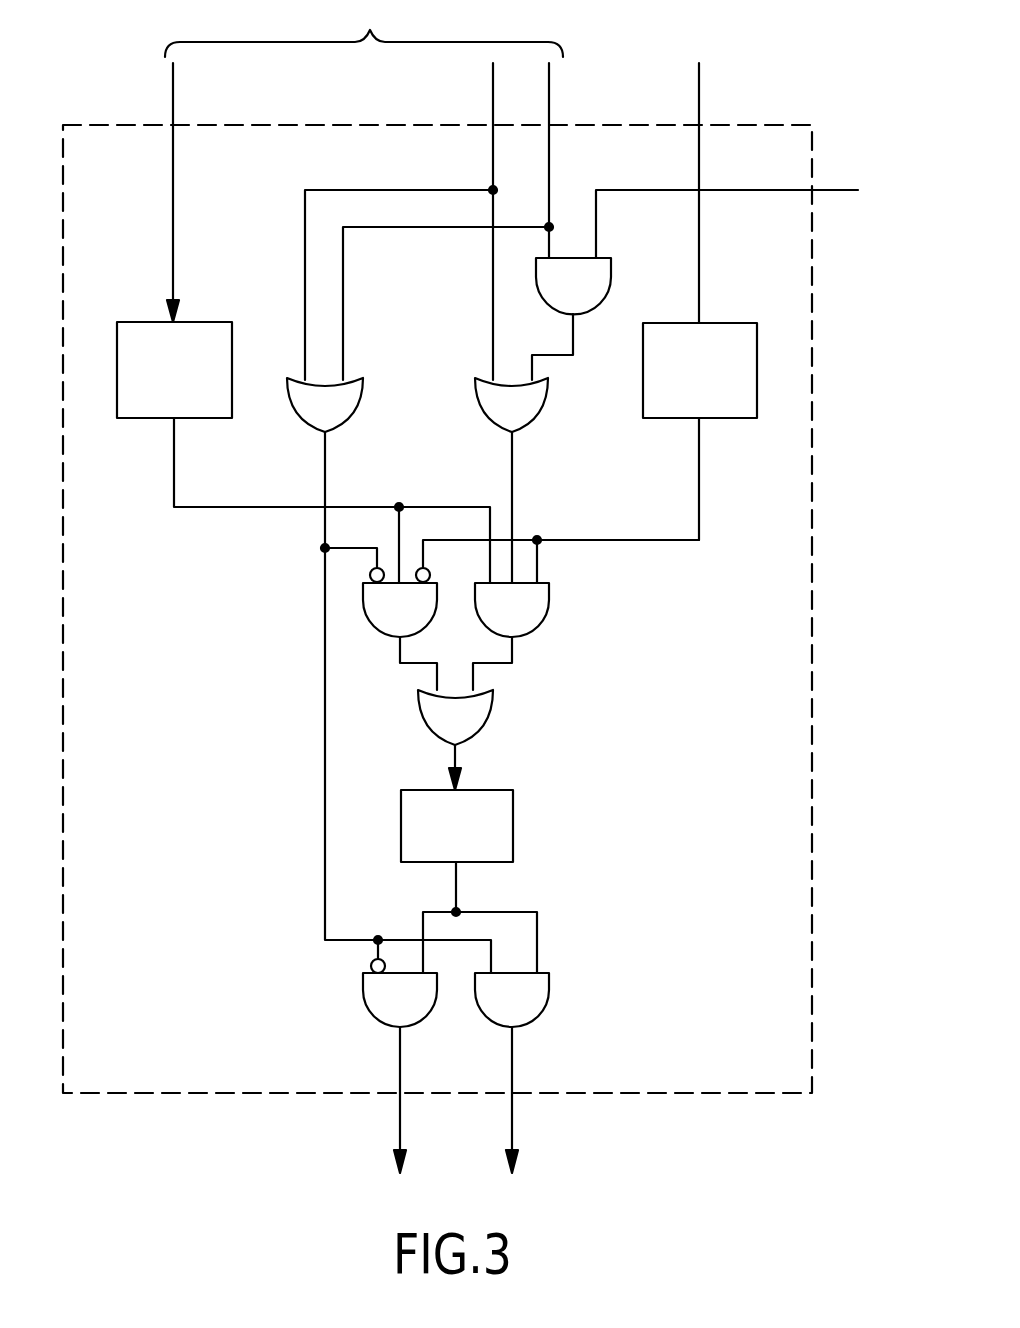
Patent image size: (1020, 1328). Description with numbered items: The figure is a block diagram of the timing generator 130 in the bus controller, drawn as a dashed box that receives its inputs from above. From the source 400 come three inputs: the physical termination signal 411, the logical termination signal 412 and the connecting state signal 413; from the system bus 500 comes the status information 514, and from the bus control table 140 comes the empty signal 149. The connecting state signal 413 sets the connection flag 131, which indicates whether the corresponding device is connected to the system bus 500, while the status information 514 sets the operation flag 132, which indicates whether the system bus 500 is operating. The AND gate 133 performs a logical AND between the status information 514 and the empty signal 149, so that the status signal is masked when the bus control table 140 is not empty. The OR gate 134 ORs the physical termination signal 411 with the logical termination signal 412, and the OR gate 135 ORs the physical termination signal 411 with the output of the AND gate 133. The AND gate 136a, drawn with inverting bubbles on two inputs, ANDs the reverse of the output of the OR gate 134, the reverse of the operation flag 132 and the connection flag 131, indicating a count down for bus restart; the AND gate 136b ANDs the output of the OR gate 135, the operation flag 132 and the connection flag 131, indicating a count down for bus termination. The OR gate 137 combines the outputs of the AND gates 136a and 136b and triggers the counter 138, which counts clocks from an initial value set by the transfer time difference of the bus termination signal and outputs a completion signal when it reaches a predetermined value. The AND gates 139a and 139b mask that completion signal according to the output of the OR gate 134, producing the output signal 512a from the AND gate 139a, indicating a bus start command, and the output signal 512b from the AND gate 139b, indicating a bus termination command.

The timing generator 130 is at (720, 1093).
The connection flag 131 is at (205, 420).
The operation flag 132 is at (730, 420).
The AND gate 133 is at (611, 300).
The OR gate 134 is at (355, 410).
The OR gate 135 is at (540, 412).
The AND gate 136a is at (375, 625).
The AND gate 136b is at (549, 612).
The OR gate 137 is at (488, 718).
The counter 138 is at (513, 835).
The AND gate 139a is at (382, 1028).
The AND gate 139b is at (480, 1007).
The bus control table 140 is at (898, 179).
The empty signal 149 is at (830, 190).
The source of input signals 400 is at (364, 29).
The physical termination signal 411 is at (490, 106).
The logical termination signal 412 is at (551, 106).
The connecting state signal 413 is at (175, 102).
The system bus 500 is at (697, 35).
The status information 514 is at (701, 106).
The output signal 512a is at (402, 1125).
The output signal 512b is at (514, 1125).